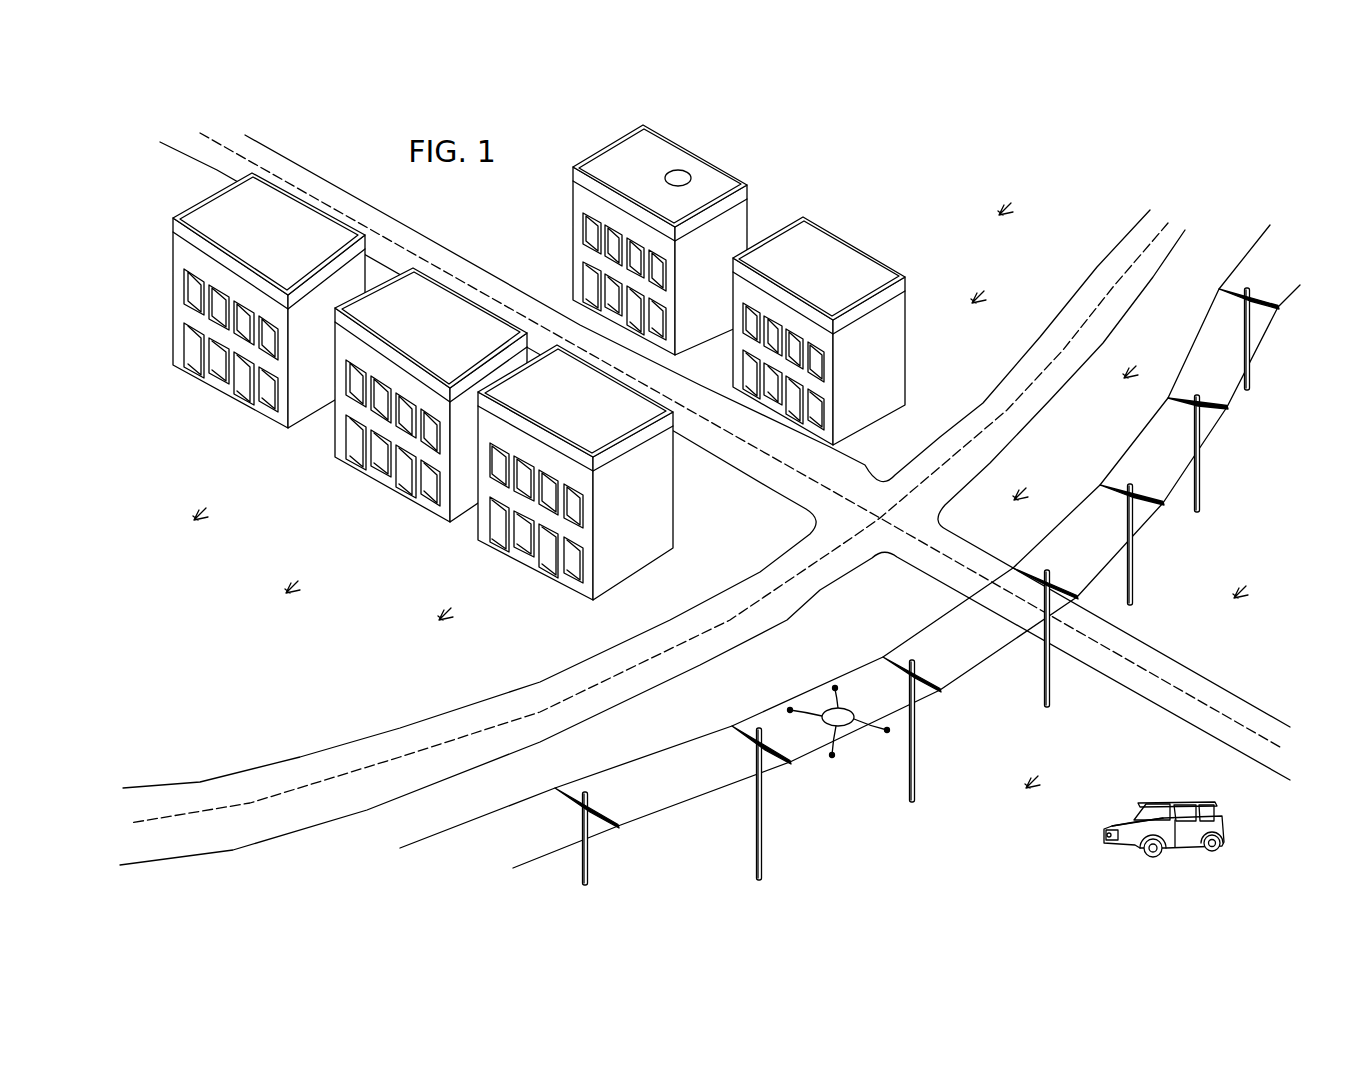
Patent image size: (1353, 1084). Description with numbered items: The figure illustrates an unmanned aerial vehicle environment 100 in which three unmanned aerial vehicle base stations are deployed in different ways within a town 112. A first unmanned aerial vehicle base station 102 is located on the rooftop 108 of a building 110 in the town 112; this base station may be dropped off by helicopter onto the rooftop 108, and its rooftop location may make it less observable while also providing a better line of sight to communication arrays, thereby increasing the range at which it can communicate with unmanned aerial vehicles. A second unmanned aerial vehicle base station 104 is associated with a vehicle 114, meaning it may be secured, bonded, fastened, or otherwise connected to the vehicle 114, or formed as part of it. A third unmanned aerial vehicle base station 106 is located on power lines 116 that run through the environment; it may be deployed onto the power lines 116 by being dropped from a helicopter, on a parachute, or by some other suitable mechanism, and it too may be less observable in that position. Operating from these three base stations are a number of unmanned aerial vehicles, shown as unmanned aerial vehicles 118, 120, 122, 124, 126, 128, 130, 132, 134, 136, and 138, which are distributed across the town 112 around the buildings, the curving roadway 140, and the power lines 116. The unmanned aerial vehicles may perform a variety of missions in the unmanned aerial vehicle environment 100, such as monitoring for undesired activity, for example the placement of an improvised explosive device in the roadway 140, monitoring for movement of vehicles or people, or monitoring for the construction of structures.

The unmanned aerial vehicle environment 100 is at (1133, 178).
The unmanned aerial vehicle base station 102 is at (682, 176).
The unmanned aerial vehicle base station 104 is at (1187, 798).
The unmanned aerial vehicle base station 106 is at (846, 722).
The rooftop 108 is at (600, 172).
The building 110 is at (572, 232).
The town 112 is at (838, 177).
The vehicle 114 is at (1128, 818).
The power lines 116 is at (860, 670).
The unmanned aerial vehicle 118 is at (206, 508).
The unmanned aerial vehicle 120 is at (298, 581).
The unmanned aerial vehicle 122 is at (846, 308).
The unmanned aerial vehicle 124 is at (352, 296).
The unmanned aerial vehicle 126 is at (984, 291).
The unmanned aerial vehicle 128 is at (1011, 203).
The unmanned aerial vehicle 130 is at (1136, 366).
The unmanned aerial vehicle 132 is at (1026, 488).
The unmanned aerial vehicle 134 is at (451, 608).
The unmanned aerial vehicle 136 is at (1038, 776).
The unmanned aerial vehicle 138 is at (1246, 586).
The roadway 140 is at (410, 727).